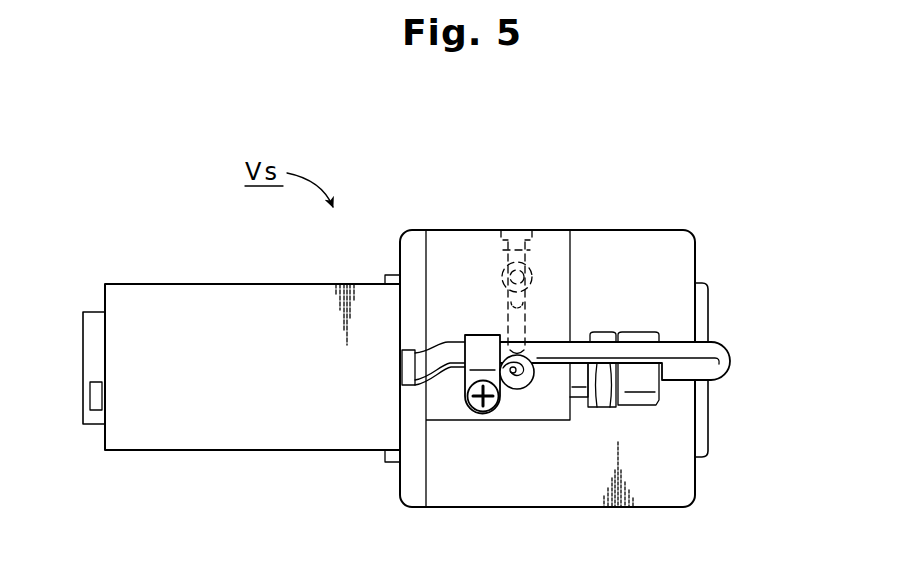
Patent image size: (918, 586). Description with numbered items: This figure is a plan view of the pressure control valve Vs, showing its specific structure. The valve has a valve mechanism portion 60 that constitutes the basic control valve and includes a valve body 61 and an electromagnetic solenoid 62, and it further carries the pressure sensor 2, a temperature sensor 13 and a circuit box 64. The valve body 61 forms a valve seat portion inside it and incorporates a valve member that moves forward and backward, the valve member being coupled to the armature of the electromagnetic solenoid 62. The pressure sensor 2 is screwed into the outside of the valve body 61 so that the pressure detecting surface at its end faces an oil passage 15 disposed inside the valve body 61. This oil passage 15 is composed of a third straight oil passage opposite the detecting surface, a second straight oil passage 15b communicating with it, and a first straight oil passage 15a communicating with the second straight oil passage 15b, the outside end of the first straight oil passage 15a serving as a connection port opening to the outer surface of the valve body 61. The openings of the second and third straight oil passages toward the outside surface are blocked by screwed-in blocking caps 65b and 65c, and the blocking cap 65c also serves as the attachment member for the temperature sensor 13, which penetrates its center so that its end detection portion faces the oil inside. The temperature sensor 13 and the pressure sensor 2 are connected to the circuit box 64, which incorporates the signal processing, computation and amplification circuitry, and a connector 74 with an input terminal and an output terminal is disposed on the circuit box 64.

The pressure sensor 2 is at (578, 403).
The temperature sensor 13 is at (518, 380).
The oil passage 15 is at (531, 254).
The first straight oil passage 15a is at (535, 280).
The second straight oil passage 15b is at (520, 306).
The valve mechanism portion 60 is at (703, 474).
The valve body 61 is at (467, 508).
The electromagnetic solenoid 62 is at (93, 312).
The circuit box 64 is at (220, 284).
The blocking cap 65b is at (505, 245).
The blocking cap 65c is at (535, 380).
The connector 74 is at (93, 425).